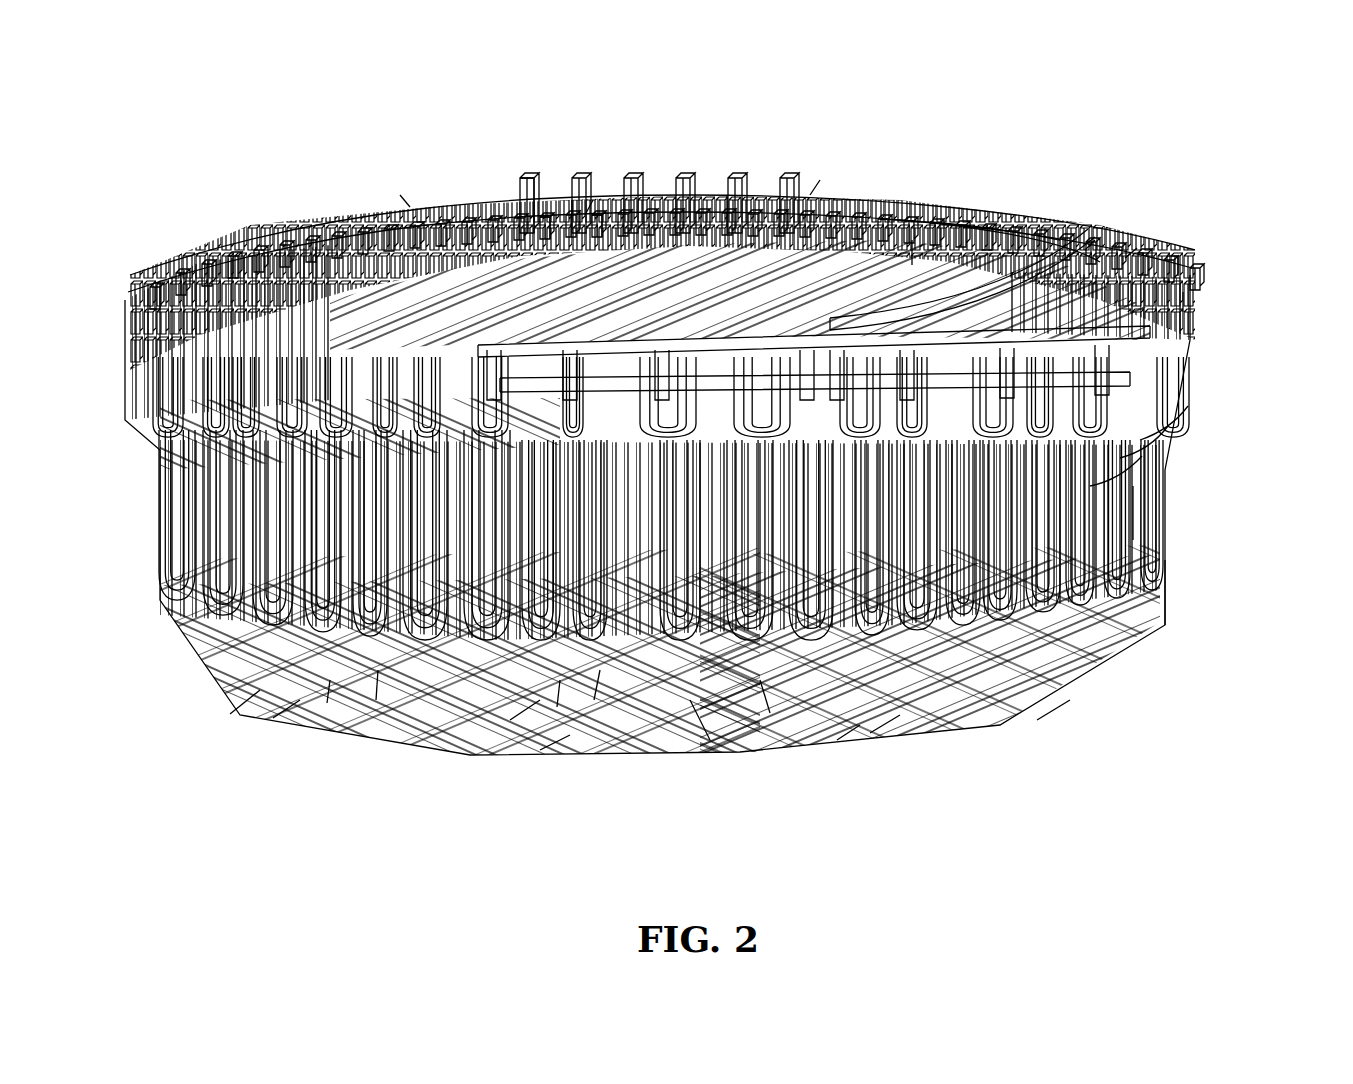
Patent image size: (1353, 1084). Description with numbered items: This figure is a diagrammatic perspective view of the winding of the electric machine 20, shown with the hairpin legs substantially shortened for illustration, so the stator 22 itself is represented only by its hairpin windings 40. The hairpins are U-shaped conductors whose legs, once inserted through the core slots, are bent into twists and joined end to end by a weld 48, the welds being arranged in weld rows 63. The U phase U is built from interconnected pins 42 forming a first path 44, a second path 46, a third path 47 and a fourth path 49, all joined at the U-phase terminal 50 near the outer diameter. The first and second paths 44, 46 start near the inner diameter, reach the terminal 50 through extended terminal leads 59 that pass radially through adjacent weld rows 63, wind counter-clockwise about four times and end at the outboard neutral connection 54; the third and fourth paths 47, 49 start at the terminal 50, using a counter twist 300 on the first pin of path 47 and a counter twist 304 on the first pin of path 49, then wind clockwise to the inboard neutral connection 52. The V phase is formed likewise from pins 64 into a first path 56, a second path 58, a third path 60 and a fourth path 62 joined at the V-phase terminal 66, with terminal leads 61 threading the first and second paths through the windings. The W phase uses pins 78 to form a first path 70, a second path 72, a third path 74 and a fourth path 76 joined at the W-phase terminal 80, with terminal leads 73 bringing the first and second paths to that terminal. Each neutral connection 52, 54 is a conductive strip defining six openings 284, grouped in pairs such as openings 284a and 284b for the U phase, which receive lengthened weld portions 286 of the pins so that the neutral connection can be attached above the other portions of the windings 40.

The electric machine 20 is at (1117, 97).
The stator 22 is at (1208, 564).
The hairpin windings 40 is at (948, 163).
The pins 42 is at (553, 185).
The first path 44 is at (273, 718).
The second path 46 is at (327, 703).
The third path 47 is at (510, 720).
The weld 48 is at (805, 190).
The fourth path 49 is at (540, 750).
The U-phase terminal 50 is at (572, 200).
The inboard neutral connection 52 is at (1095, 240).
The outboard neutral connection 54 is at (727, 195).
The first path 56 is at (557, 707).
The second path 58 is at (594, 700).
The terminal leads 59 is at (710, 740).
The third path 60 is at (1133, 486).
The terminal leads 61 is at (870, 733).
The fourth path 62 is at (1142, 456).
The weld rows 63 is at (525, 160).
The pins 64 is at (837, 740).
The V-phase terminal 66 is at (912, 240).
The first path 70 is at (1183, 292).
The second path 72 is at (1178, 256).
The terminal leads 73 is at (1178, 366).
The third path 74 is at (1168, 426).
The fourth path 76 is at (1188, 406).
The pins 78 is at (1037, 720).
The W-phase terminal 80 is at (1170, 350).
The openings 284 is at (1098, 236).
The opening 284a is at (405, 192).
The opening 284b is at (597, 340).
The weld portion 286 is at (1137, 248).
The counter twist 300 is at (376, 700).
The counter twist 304 is at (770, 713).
The U phase U is at (230, 714).